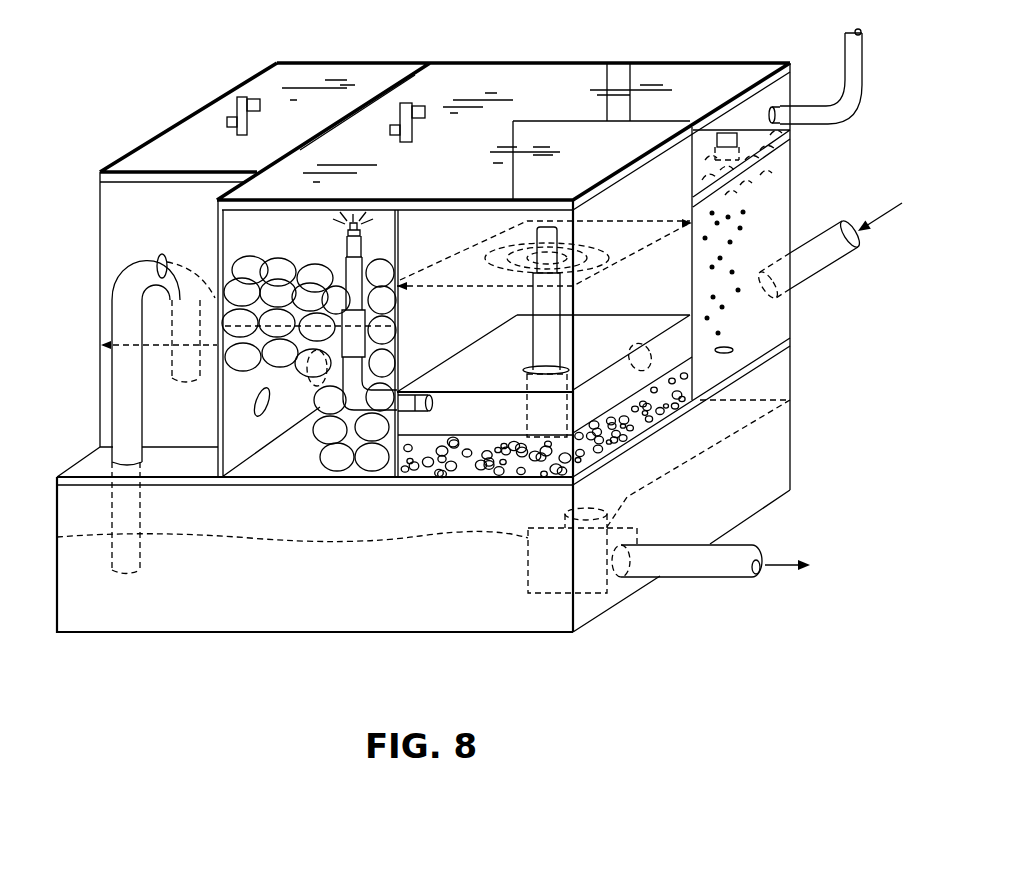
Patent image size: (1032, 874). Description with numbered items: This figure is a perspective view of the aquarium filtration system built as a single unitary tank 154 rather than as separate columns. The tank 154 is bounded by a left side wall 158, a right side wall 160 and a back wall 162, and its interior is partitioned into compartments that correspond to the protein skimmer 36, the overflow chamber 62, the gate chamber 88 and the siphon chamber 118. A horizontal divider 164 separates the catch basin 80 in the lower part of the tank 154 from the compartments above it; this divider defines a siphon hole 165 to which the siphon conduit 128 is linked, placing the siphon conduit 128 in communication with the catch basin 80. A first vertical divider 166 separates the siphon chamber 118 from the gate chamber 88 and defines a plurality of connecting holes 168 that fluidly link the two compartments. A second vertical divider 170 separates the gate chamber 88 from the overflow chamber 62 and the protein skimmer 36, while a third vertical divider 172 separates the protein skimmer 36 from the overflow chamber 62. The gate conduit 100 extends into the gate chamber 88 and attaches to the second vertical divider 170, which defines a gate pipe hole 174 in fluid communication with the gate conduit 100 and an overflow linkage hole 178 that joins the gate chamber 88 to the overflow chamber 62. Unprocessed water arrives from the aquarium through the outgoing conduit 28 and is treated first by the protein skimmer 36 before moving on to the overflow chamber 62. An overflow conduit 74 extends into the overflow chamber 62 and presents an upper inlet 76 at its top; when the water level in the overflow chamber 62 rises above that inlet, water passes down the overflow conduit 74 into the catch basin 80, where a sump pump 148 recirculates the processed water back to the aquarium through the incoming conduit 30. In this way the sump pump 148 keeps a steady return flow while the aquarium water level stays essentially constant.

The outgoing conduit 28 is at (827, 263).
The incoming conduit 30 is at (727, 577).
The protein skimmer 36 is at (679, 88).
The overflow chamber 62 is at (578, 150).
The overflow conduit 74 is at (530, 333).
The upper inlet 76 is at (570, 420).
The catch basin 80 is at (93, 610).
The gate chamber 88 is at (477, 80).
The gate conduit 100 is at (353, 340).
The siphon chamber 118 is at (370, 80).
The siphon conduit 128 is at (127, 282).
The sump pump 148 is at (553, 595).
The tank 154 is at (96, 176).
The left side wall 158 is at (180, 150).
The right side wall 160 is at (793, 63).
The back wall 162 is at (343, 62).
The horizontal divider 164 is at (57, 477).
The siphon hole 165 is at (125, 455).
The first vertical divider 166 is at (408, 72).
The connecting holes 168 is at (318, 386).
The second vertical divider 170 is at (557, 90).
The third vertical divider 172 is at (627, 113).
The gate pipe hole 174 is at (430, 405).
The overflow linkage hole 178 is at (637, 342).